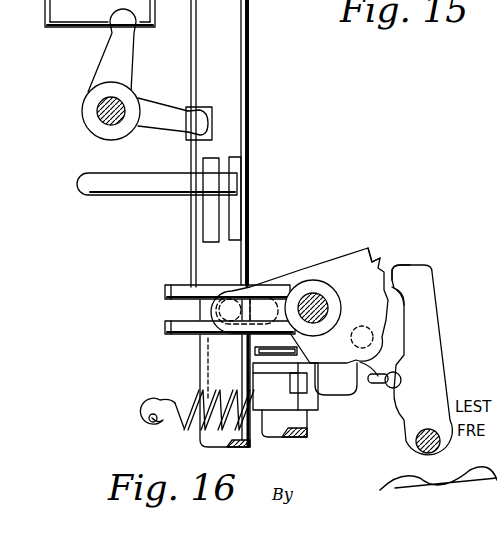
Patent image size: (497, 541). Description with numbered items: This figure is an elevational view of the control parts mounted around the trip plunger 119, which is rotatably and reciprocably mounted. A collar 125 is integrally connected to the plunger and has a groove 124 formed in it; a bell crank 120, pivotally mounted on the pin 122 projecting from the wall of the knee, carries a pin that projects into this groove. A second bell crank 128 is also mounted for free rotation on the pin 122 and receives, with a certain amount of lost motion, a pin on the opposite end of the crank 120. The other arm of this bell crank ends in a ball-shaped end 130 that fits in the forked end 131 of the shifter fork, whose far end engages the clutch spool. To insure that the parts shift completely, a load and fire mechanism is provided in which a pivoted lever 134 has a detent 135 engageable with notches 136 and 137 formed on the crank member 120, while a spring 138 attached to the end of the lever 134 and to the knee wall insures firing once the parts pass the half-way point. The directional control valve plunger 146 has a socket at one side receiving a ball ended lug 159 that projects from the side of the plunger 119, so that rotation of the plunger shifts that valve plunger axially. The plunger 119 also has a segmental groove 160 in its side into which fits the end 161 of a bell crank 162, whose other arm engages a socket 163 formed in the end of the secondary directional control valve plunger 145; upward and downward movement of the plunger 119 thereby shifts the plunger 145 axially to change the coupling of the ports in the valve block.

The trip plunger 119 is at (248, 90).
The bell crank 120 is at (292, 282).
The pin 122 is at (313, 292).
The groove 124 is at (167, 322).
The collar 125 is at (172, 285).
The bell crank 128 is at (392, 358).
The ball-shaped end 130 is at (300, 395).
The forked end 131 is at (292, 437).
The pivoted lever 134 is at (427, 320).
The detent 135 is at (394, 272).
The notch 136 is at (402, 305).
The notch 137 is at (373, 262).
The spring 138 is at (350, 397).
The secondary directional control valve plunger 145 is at (78, 30).
The directional control valve plunger 146 is at (137, 198).
The ball ended lug 159 is at (223, 218).
The segmental groove 160 is at (215, 125).
The end 161 is at (190, 136).
The bell crank 162 is at (88, 115).
The socket 163 is at (150, 17).